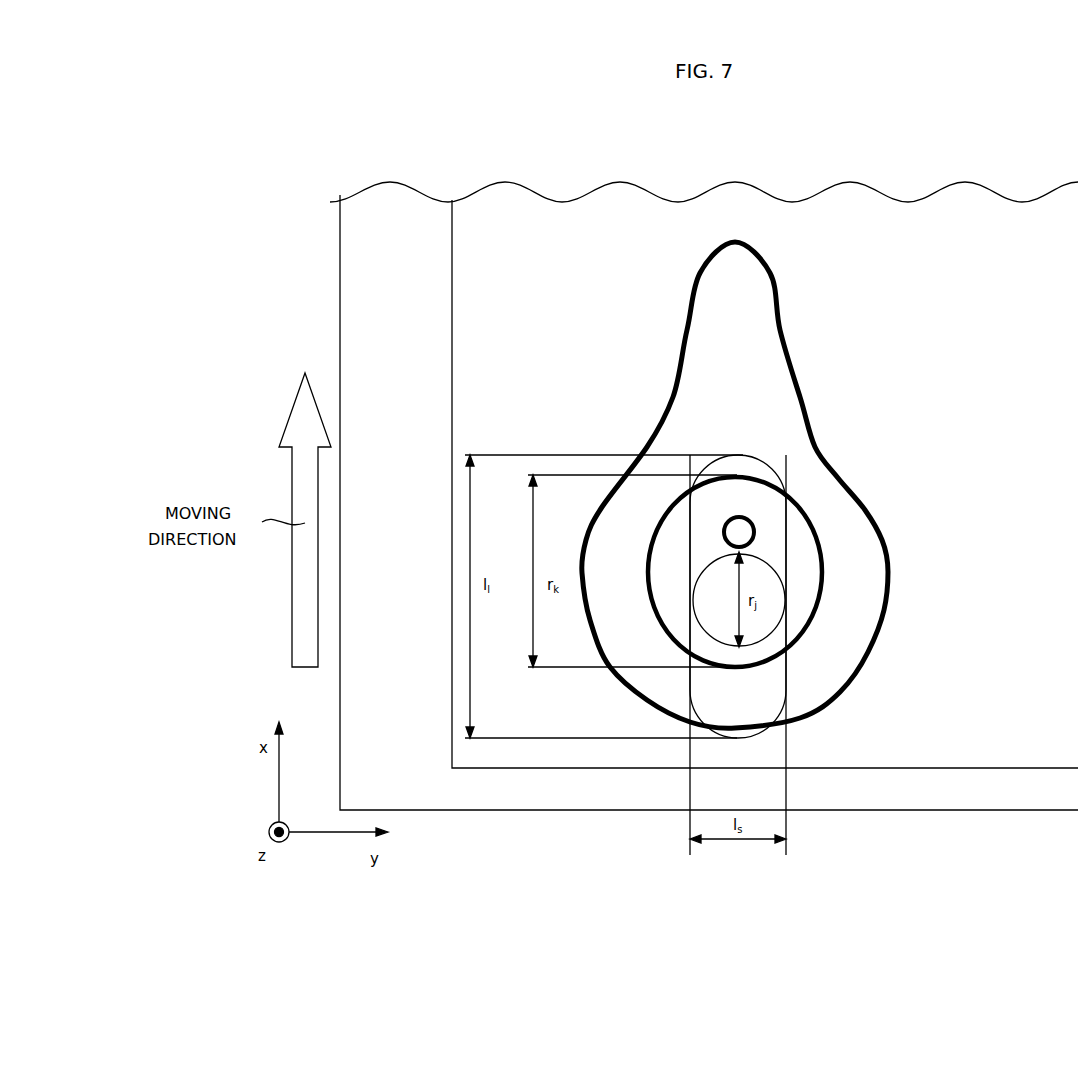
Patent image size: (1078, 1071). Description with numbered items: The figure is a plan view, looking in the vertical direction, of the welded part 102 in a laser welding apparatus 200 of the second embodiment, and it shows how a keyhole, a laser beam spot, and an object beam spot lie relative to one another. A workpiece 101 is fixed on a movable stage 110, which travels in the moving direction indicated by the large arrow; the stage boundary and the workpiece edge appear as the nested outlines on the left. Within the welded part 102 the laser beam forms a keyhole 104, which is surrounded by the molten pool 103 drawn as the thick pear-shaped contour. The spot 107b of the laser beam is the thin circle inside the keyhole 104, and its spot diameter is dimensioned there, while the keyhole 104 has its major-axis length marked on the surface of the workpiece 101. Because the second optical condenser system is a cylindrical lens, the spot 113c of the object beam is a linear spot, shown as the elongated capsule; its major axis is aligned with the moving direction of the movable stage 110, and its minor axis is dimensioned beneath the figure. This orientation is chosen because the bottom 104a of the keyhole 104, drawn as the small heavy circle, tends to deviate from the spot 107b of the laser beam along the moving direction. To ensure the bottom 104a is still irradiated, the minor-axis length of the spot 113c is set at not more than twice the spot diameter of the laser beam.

The laser welding apparatus 200 is at (300, 168).
The movable stage 110 is at (375, 352).
The workpiece 101 is at (517, 277).
The welded part 102 is at (947, 345).
The molten pool 103 is at (793, 457).
The keyhole 104 is at (823, 547).
The bottom of the keyhole 104a is at (737, 516).
The spot of the laser beam 107b is at (770, 575).
The spot of the object beam 113c is at (767, 700).